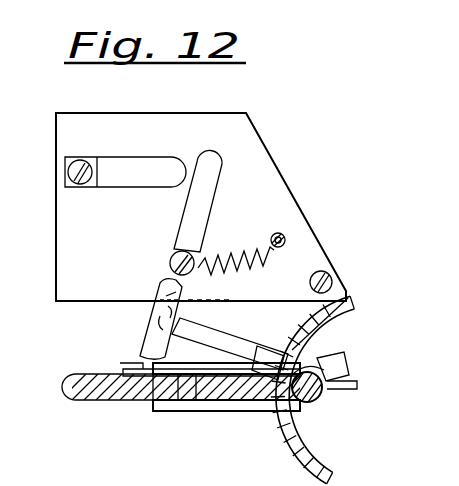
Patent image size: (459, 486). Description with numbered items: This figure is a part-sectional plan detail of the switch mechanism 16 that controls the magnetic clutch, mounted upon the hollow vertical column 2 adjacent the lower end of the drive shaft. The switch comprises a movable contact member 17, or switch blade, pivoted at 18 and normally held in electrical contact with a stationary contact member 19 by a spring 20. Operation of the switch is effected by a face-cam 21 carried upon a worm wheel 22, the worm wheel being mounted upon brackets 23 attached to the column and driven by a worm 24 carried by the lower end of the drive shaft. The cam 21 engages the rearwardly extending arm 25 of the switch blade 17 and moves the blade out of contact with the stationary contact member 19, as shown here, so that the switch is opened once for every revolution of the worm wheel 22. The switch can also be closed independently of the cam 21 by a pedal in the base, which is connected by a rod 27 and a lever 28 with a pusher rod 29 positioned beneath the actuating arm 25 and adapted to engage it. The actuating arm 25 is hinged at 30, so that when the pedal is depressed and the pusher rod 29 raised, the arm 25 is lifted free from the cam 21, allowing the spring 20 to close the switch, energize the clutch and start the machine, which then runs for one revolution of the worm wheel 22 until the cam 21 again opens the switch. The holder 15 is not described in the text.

The vertical column 2 is at (288, 441).
The holder 15 is at (310, 366).
The switch mechanism 16 is at (68, 224).
The movable contact member 17 is at (192, 226).
The pivot 18 is at (168, 260).
The stationary contact member 19 is at (128, 166).
The spring 20 is at (240, 256).
The face-cam 21 is at (130, 373).
The worm wheel 22 is at (110, 394).
The brackets 23 is at (226, 401).
The worm 24 is at (310, 402).
The rearwardly extending arm 25 is at (143, 341).
The rod 27 is at (238, 364).
The lever 28 is at (195, 336).
The pusher rod 29 is at (212, 293).
The hinge 30 is at (160, 279).